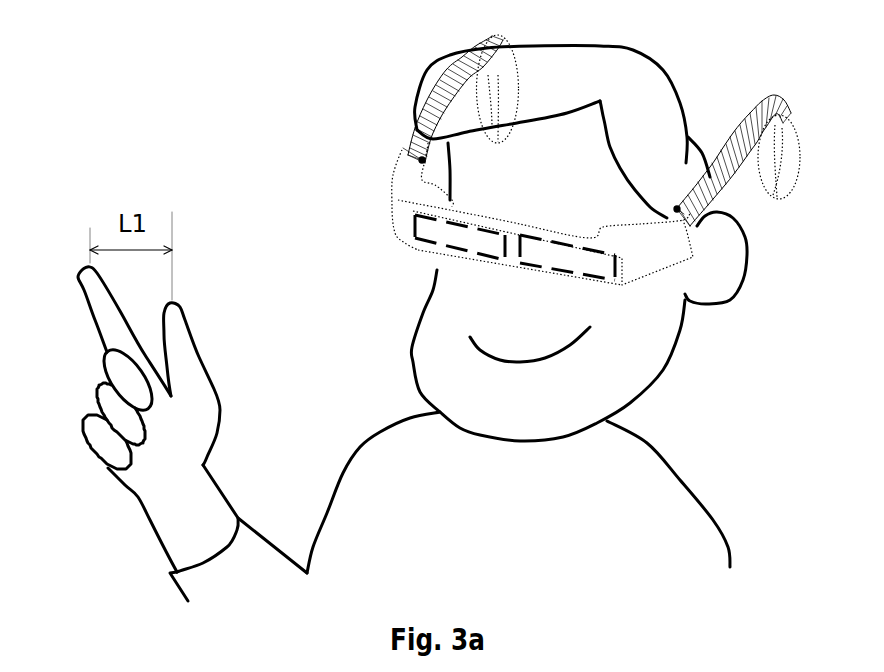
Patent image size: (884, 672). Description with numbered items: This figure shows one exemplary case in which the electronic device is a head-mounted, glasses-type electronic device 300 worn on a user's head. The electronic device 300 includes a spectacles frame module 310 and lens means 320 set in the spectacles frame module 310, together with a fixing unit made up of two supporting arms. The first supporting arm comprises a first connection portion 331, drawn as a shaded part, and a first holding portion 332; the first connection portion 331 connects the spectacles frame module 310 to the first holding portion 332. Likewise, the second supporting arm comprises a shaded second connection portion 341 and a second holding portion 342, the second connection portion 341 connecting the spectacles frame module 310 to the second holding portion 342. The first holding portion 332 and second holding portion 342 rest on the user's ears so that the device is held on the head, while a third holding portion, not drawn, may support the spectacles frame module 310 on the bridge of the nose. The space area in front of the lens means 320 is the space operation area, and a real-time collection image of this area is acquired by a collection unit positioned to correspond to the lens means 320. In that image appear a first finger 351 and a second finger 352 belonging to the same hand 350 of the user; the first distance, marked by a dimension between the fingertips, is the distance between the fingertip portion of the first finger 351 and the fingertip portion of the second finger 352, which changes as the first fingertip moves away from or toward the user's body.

The glasses-type electronic device 300 is at (745, 53).
The spectacles frame module 310 is at (513, 265).
The lens means 320 is at (548, 243).
The first connection portion 331 is at (450, 83).
The first holding portion 332 is at (513, 92).
The second connection portion 341 is at (730, 155).
The second holding portion 342 is at (788, 118).
The hand 350 is at (223, 487).
The first finger 351 is at (81, 274).
The second finger 352 is at (174, 303).